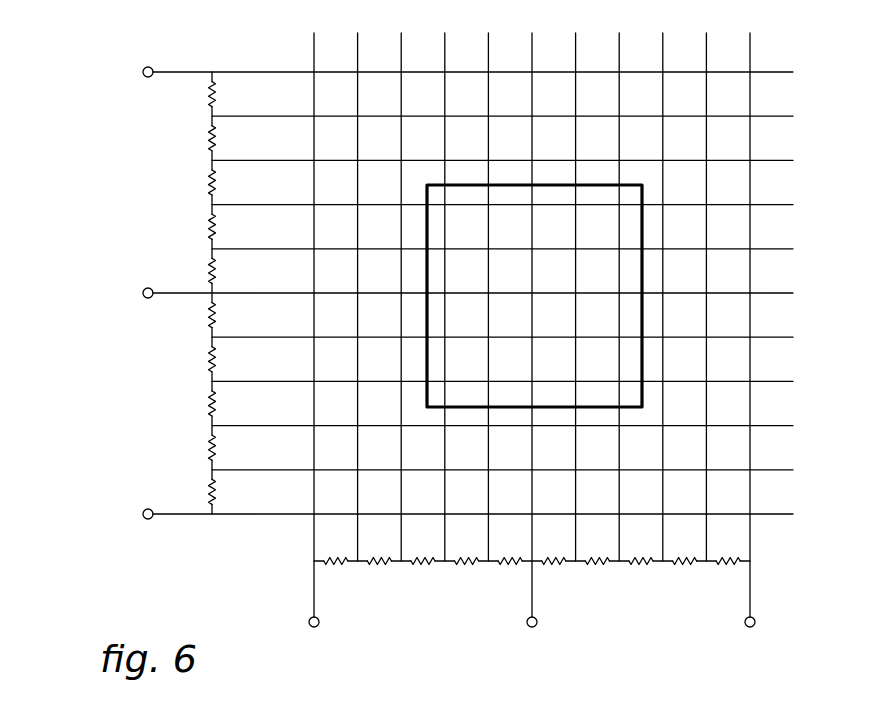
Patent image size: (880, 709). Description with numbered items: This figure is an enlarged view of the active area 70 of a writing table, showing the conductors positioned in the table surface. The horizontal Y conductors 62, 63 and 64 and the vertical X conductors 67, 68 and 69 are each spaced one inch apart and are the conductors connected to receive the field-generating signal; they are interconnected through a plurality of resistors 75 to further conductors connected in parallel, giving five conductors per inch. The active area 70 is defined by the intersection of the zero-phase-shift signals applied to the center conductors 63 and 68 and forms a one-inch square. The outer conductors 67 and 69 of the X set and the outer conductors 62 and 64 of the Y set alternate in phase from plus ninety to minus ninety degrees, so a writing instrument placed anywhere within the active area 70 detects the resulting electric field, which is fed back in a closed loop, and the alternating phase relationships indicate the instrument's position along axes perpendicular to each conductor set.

The conductor 62 is at (188, 71).
The conductor 63 is at (170, 292).
The conductor 64 is at (172, 512).
The conductor 67 is at (314, 600).
The conductor 68 is at (532, 600).
The conductor 69 is at (750, 600).
The active area 70 is at (630, 222).
The resistors 75 is at (212, 106).